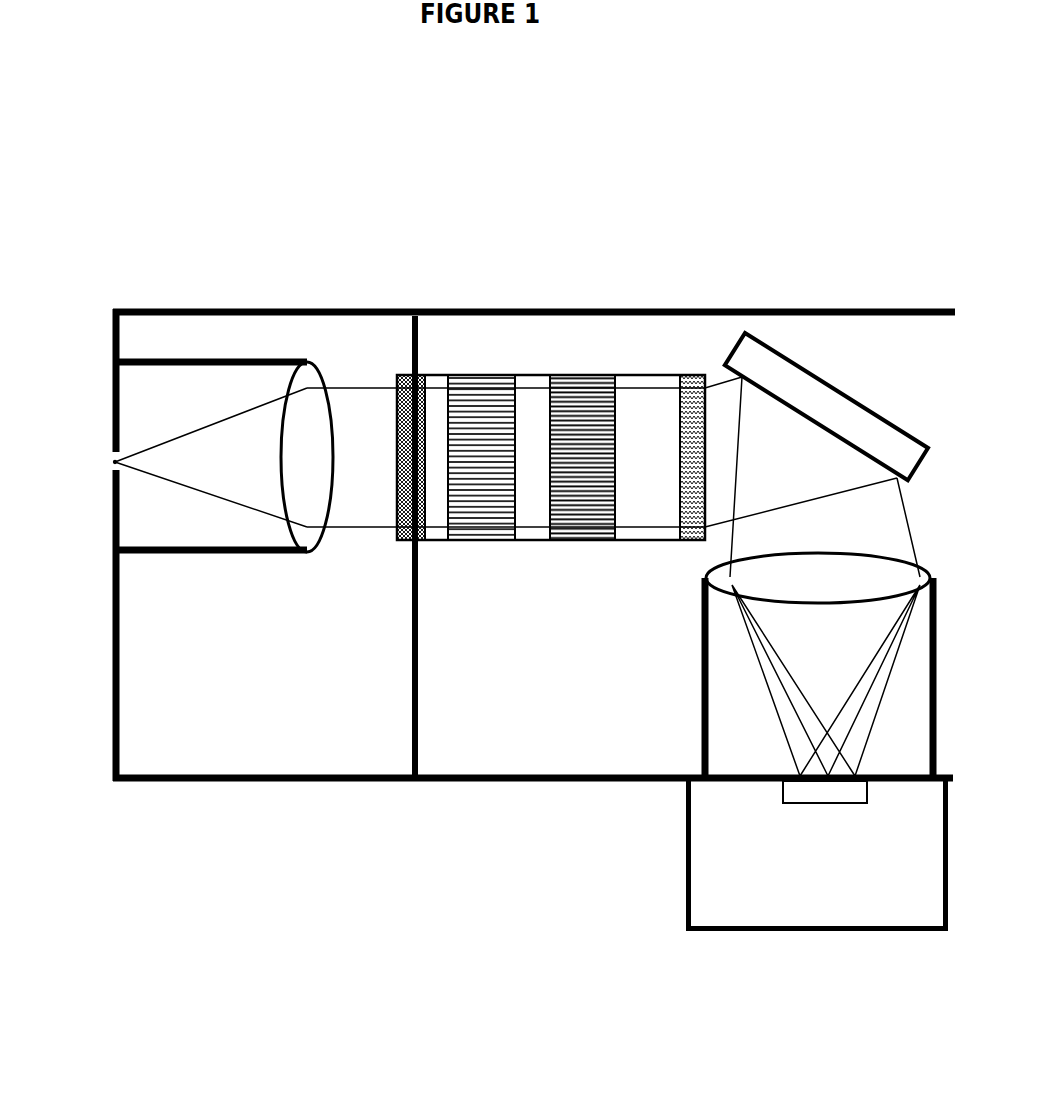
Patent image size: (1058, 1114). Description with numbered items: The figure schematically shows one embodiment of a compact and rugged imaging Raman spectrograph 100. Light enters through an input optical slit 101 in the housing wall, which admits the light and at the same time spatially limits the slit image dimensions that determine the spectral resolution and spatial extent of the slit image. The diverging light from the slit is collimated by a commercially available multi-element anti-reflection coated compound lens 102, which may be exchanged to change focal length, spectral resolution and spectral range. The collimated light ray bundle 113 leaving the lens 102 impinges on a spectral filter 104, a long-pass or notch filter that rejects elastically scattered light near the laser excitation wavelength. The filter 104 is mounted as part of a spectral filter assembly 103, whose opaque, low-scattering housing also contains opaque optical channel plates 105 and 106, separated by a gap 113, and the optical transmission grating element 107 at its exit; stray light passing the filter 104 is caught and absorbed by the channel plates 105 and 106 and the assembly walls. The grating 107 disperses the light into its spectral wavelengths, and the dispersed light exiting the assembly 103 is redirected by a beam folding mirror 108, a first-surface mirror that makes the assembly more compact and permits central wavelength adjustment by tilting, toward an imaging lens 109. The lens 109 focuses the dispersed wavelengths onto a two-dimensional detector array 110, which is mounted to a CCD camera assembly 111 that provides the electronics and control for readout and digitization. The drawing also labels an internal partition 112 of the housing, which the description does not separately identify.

The spectrograph 100 is at (253, 782).
The input optical slit 101 is at (108, 452).
The compound lens 102 is at (305, 550).
The spectral filter assembly 103 is at (532, 373).
The spectral filter 104 is at (397, 540).
The opaque optical channel plate 105 is at (480, 540).
The opaque optical channel plate 106 is at (583, 540).
The optical transmission grating element 107 is at (688, 545).
The beam folding mirror 108 is at (837, 390).
The imaging lens 109 is at (703, 580).
The detector array 110 is at (805, 805).
The CCD camera assembly 111 is at (817, 853).
The internal wall 112 is at (418, 645).
The collimated light ray bundle 113 is at (360, 387).